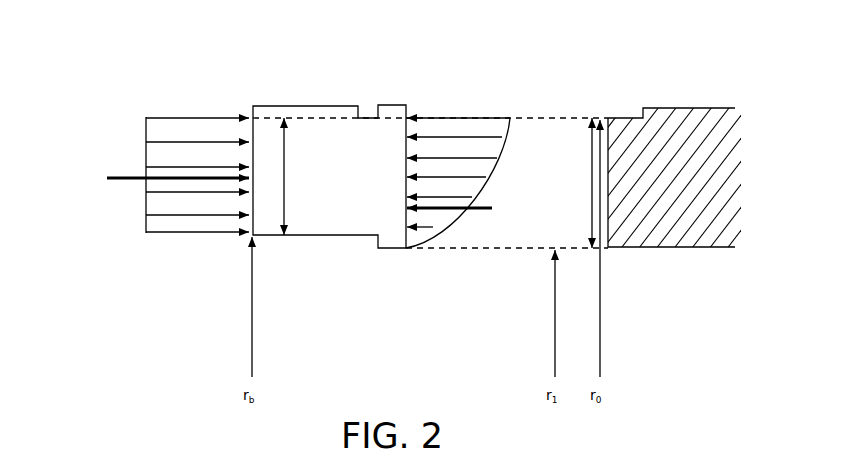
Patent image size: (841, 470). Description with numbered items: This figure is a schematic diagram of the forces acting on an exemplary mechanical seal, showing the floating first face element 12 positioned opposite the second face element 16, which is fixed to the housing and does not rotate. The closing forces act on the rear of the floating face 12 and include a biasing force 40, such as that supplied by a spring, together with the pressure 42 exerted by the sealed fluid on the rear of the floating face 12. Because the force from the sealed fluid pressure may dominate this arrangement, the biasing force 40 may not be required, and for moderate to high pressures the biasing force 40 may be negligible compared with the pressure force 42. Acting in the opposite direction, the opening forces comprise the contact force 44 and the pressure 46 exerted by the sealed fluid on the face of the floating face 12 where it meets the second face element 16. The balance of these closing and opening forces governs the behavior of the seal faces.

The first face element 12 is at (364, 186).
The second face element 16 is at (660, 108).
The biasing force 40 is at (143, 192).
The pressure exerted by the sealed fluid on the rear of the floating face 42 is at (193, 160).
The contact force 44 is at (475, 221).
The pressure exerted by the sealed fluid on the face of the floating face 46 is at (507, 168).